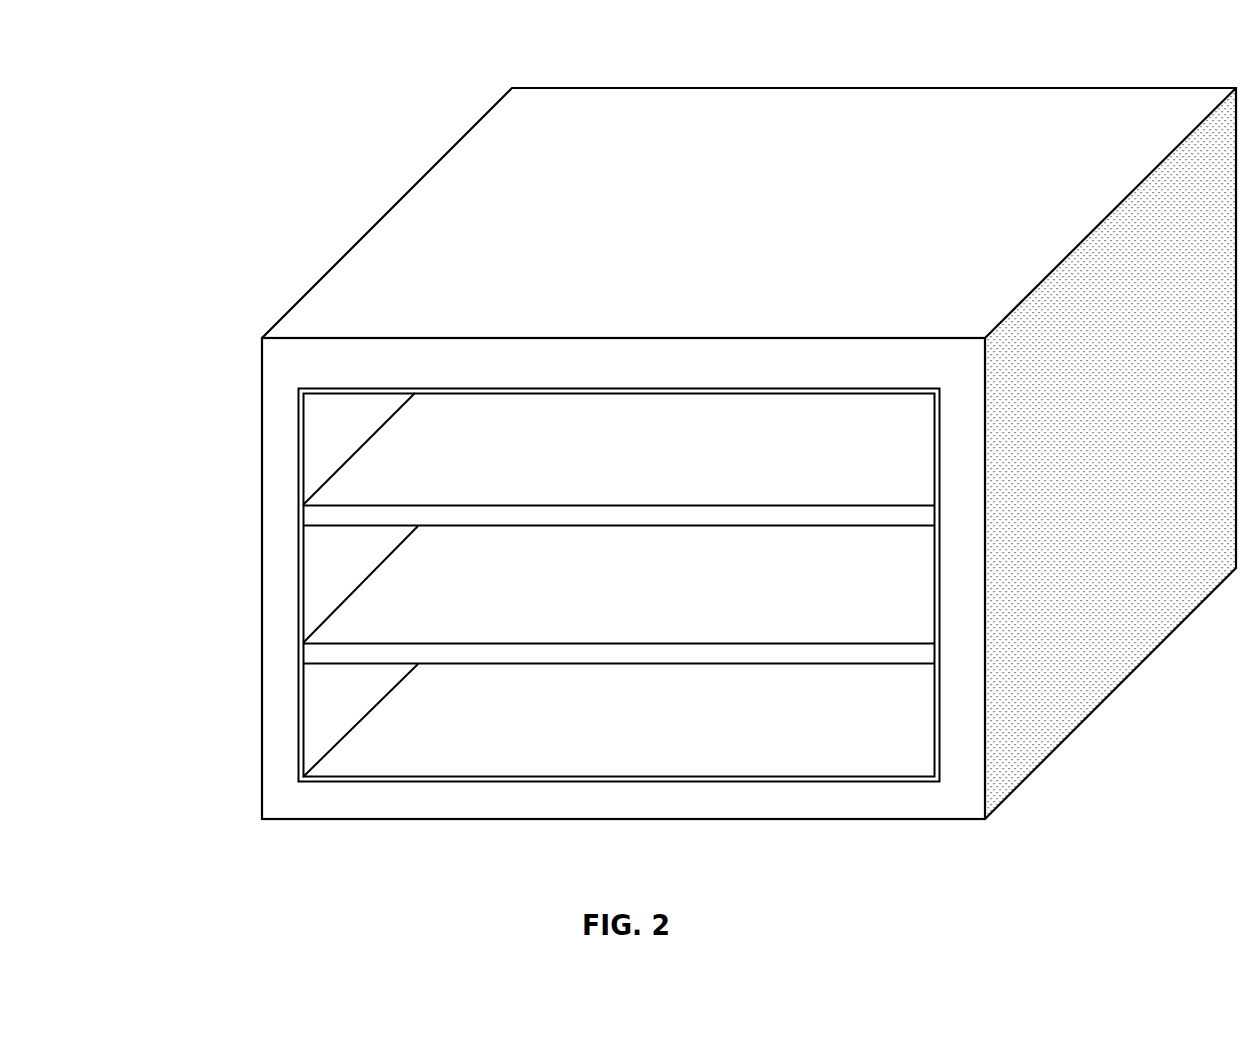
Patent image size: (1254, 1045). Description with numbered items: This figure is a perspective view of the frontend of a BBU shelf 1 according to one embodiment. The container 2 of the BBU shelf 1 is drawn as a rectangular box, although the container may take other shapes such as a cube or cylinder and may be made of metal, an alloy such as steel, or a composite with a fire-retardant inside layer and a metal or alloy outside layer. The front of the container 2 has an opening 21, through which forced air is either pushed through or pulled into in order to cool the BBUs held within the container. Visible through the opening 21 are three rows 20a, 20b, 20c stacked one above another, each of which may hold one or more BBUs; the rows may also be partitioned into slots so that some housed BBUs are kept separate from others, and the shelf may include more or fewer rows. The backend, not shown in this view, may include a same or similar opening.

The BBU shelf 1 is at (220, 125).
The container 2 is at (407, 198).
The opening 21 is at (293, 388).
The row 20a is at (182, 445).
The row 20b is at (182, 595).
The row 20c is at (182, 745).